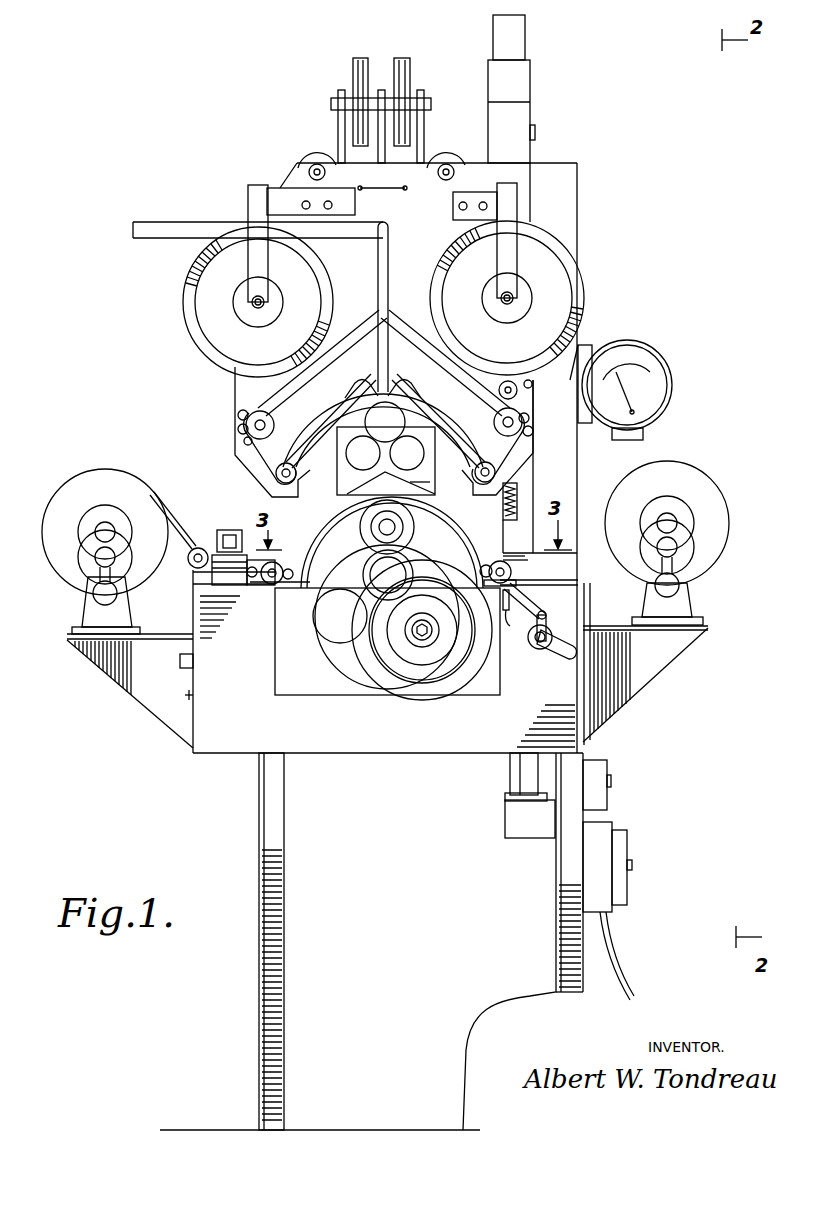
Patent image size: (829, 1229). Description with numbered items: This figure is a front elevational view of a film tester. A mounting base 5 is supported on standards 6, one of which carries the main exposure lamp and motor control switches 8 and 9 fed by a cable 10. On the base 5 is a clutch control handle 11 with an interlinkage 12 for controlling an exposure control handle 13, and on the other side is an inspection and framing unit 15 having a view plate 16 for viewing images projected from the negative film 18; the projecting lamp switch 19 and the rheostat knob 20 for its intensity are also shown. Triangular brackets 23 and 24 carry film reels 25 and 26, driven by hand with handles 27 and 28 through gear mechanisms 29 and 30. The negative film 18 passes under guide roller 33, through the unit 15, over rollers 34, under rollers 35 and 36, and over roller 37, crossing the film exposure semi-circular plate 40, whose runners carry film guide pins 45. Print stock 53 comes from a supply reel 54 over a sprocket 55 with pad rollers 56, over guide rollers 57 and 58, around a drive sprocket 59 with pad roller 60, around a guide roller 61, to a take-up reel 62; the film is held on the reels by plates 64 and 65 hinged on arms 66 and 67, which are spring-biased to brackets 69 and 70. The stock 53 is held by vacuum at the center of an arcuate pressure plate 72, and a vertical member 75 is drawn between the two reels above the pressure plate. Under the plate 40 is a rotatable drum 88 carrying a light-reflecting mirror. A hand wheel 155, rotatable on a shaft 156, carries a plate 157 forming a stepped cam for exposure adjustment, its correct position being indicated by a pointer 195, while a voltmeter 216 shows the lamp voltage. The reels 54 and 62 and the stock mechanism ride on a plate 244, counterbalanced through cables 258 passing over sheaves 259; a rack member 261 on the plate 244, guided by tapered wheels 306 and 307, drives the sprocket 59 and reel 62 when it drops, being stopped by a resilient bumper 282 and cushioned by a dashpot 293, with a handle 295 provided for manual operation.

The mounting base 5 is at (388, 458).
The standards 6 is at (284, 910).
The main exposure lamp control switch 8 is at (607, 765).
The motor control switch 9 is at (628, 862).
The cable 10 is at (612, 950).
The clutch control handle 11 is at (550, 655).
The interlinkage 12 is at (548, 606).
The exposure control handle 13 is at (509, 612).
The inspection and framing unit 15 is at (228, 528).
The view plate 16 is at (230, 530).
The negative film 18 is at (182, 556).
The projecting lamp switch 19 is at (186, 696).
The rheostat knob 20 is at (180, 661).
The triangular bracket 23 is at (115, 678).
The triangular bracket 24 is at (668, 668).
The film reel 25 is at (62, 566).
The film reel 26 is at (705, 560).
The handle 27 is at (100, 590).
The handle 28 is at (672, 568).
The gear mechanism 29 is at (95, 555).
The gear mechanism 30 is at (685, 547).
The guide roller 33 is at (196, 547).
The rollers 34 is at (262, 586).
The roller 35 is at (282, 562).
The roller 36 is at (494, 560).
The roller 37 is at (516, 576).
The film exposure semi-circular plate 40 is at (342, 510).
The film guide pins 45 is at (412, 481).
The print stock 53 is at (300, 476).
The supply reel 54 is at (202, 352).
The sprocket 55 is at (270, 418).
The pad rollers 56 is at (240, 432).
The guide roller 57 is at (250, 470).
The guide roller 58 is at (496, 468).
The drive sprocket 59 is at (496, 413).
The pad roller 60 is at (532, 422).
The guide roller 61 is at (520, 392).
The take-up reel 62 is at (575, 280).
The plate 64 is at (258, 302).
The plate 65 is at (507, 308).
The arm 66 is at (262, 266).
The arm 67 is at (510, 262).
The bracket 69 is at (275, 205).
The bracket 70 is at (455, 210).
The arcuate pressure plate 72 is at (418, 393).
The post 75 is at (388, 253).
The rotatable drum 88 is at (318, 560).
The hand wheel 155 is at (397, 668).
The shaft 156 is at (416, 632).
The plate 157 is at (370, 665).
The pointer 195 is at (412, 562).
The voltmeter 216 is at (672, 380).
The plate 244 is at (476, 523).
The cables 258 is at (345, 150).
The sheaves 259 is at (352, 72).
The rack member 261 is at (518, 492).
The resilient bumper 282 is at (530, 558).
The dashpot 293 is at (508, 775).
The handle 295 is at (580, 360).
The tapered wheel 306 is at (448, 158).
The tapered wheel 307 is at (300, 165).